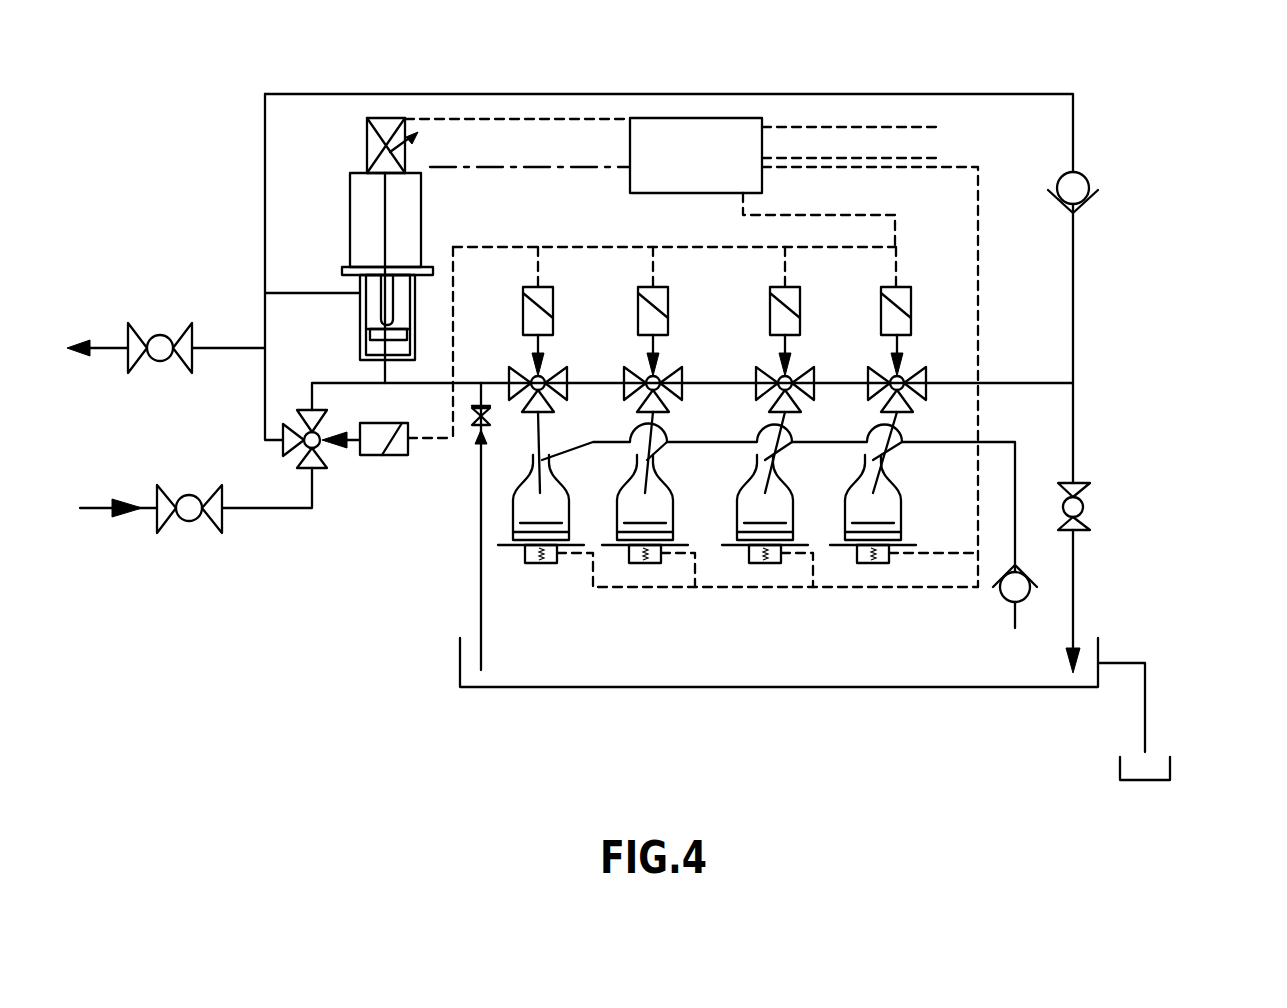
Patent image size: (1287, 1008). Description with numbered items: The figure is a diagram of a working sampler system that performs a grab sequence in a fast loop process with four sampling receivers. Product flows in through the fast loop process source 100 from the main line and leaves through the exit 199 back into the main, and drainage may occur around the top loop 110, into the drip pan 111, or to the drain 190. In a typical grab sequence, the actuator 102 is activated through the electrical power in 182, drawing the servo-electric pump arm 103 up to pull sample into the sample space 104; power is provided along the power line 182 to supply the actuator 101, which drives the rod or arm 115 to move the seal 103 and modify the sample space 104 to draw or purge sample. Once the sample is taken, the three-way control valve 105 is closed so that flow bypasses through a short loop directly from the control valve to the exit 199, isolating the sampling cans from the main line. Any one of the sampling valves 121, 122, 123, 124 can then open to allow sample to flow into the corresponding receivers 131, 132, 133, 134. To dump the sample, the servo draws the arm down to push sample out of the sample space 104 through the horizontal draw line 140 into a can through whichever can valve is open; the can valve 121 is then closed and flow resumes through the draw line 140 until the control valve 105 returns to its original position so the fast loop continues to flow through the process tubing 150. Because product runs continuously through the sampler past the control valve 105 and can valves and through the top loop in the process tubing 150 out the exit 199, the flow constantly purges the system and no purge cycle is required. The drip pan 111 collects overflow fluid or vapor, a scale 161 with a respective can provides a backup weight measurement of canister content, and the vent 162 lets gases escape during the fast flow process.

The fast loop process source 100 is at (143, 500).
The actuator 101 is at (349, 194).
The actuator 102 is at (367, 140).
The servo-electric pump arm 103 is at (420, 327).
The sample space 104 is at (372, 347).
The three-way control valve 105 is at (318, 470).
The top loop 110 is at (1073, 337).
The drip pan 111 is at (937, 687).
The rod or arm 115 is at (400, 300).
The sampling valve 121 is at (530, 367).
The sampling valve 122 is at (645, 367).
The sampling valve 123 is at (777, 365).
The sampling valve 124 is at (887, 365).
The receiver 131 is at (541, 500).
The receiver 132 is at (645, 500).
The receiver 133 is at (765, 500).
The receiver 134 is at (873, 500).
The horizontal draw line 140 is at (414, 384).
The process tubing 150 is at (840, 93).
The scale 161 is at (550, 563).
The vent 162 is at (447, 523).
The electrical power in 182 is at (573, 118).
The drain 190 is at (1185, 702).
The exit 199 is at (106, 340).